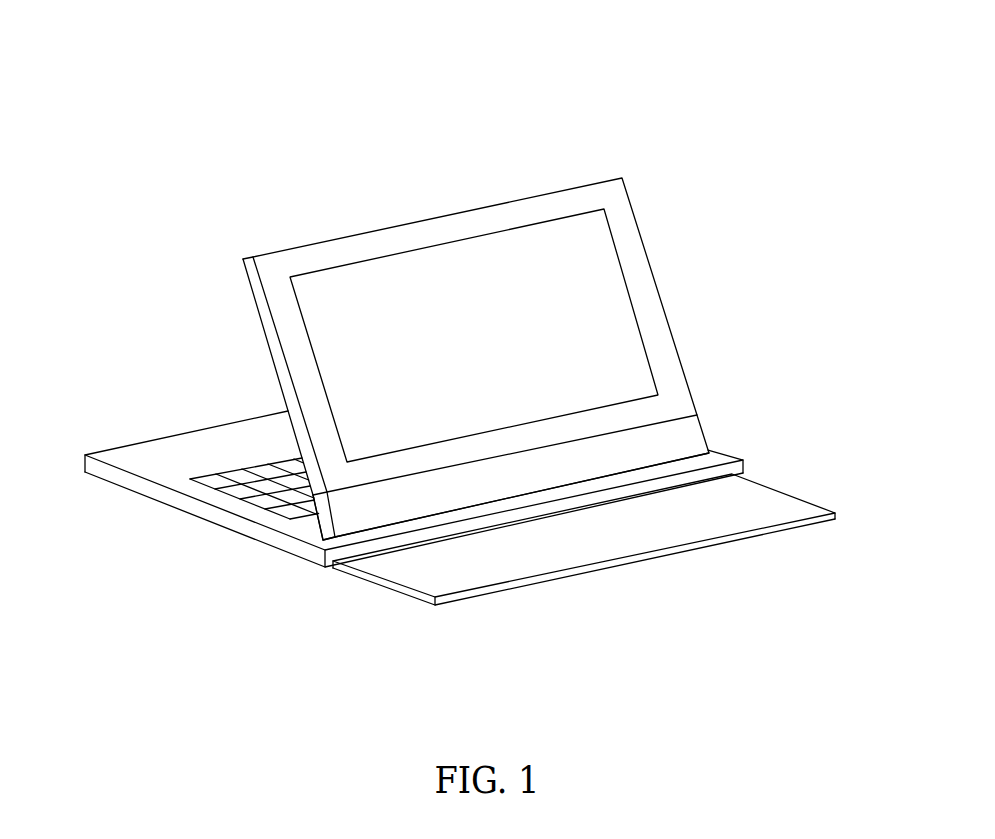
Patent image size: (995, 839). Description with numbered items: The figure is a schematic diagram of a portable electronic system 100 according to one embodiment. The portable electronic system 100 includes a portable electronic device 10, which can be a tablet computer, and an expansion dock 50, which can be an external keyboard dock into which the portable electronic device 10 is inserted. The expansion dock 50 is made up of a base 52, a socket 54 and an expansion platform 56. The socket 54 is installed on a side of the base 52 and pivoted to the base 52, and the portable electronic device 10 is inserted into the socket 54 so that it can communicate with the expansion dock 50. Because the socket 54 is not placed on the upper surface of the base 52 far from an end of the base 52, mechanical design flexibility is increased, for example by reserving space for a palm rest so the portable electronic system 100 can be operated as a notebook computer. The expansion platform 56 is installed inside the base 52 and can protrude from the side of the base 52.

The portable electronic system 100 is at (617, 78).
The portable electronic device 10 is at (643, 190).
The expansion dock 50 is at (418, 655).
The base 52 is at (223, 497).
The socket 54 is at (343, 517).
The expansion platform 56 is at (397, 573).